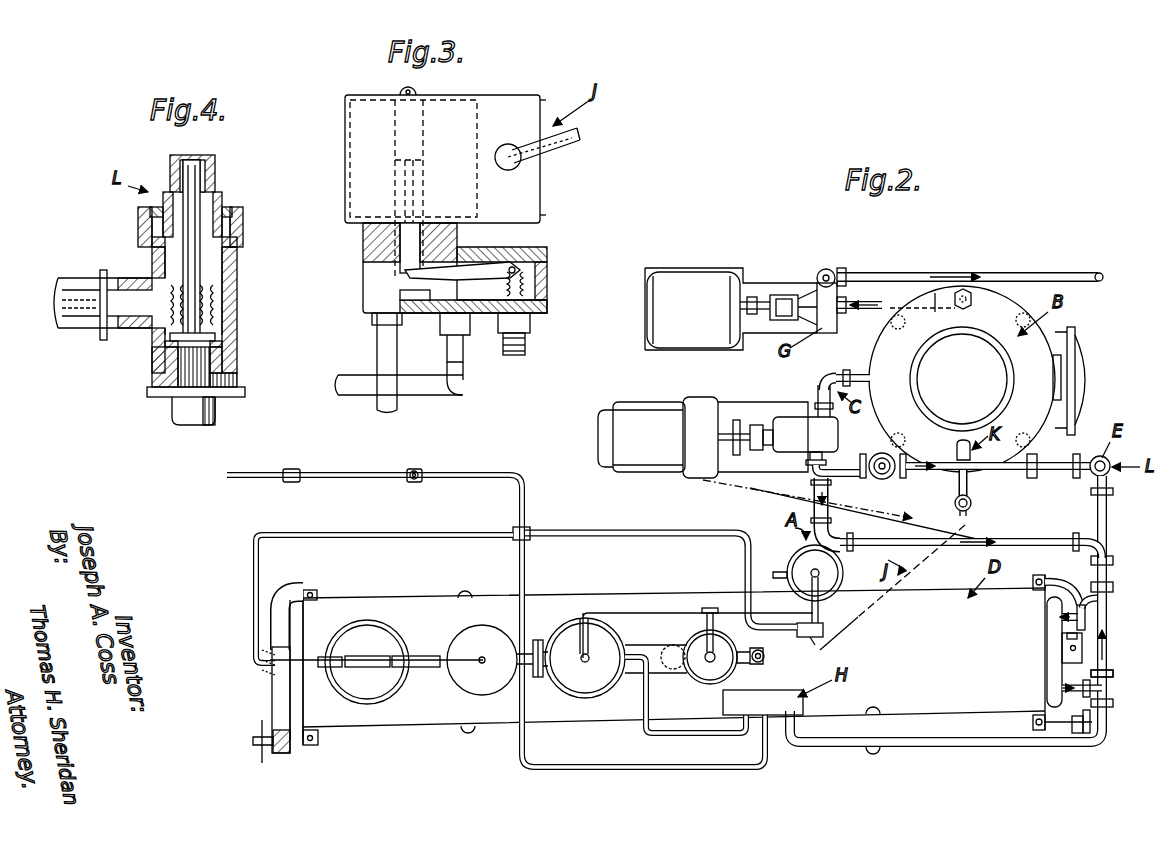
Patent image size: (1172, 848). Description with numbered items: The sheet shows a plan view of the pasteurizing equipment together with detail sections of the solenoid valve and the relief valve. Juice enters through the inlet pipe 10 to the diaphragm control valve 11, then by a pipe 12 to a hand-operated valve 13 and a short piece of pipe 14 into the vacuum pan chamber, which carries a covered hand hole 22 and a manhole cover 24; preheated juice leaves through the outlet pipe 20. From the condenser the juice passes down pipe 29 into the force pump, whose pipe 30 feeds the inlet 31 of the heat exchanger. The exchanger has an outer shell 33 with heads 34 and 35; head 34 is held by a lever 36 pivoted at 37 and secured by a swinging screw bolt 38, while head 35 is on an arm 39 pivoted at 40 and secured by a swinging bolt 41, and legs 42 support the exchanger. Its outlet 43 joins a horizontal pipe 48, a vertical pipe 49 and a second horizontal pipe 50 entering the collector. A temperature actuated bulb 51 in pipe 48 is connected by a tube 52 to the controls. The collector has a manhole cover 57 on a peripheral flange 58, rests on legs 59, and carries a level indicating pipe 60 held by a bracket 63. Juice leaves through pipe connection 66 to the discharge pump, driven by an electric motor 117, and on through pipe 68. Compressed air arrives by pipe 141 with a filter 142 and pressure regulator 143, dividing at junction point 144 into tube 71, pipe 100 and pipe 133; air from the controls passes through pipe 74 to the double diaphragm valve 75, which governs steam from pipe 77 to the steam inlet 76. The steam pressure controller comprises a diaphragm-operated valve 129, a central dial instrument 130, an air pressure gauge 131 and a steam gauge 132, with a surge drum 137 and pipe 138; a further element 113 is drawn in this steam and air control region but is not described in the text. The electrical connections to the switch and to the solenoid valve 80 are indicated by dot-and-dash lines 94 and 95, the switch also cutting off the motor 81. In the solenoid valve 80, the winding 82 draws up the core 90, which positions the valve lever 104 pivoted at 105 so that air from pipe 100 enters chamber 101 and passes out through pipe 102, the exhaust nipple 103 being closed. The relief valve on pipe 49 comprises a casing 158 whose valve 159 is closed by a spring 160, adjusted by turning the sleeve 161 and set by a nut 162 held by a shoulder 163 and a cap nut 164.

In FIG. 2, the inlet pipe 10 is at (780, 572).
In FIG. 2, the diaphragm control valve 11 is at (822, 570).
In FIG. 2, the pipe 12 is at (810, 477).
In FIG. 2, the hand-operated valve 13 is at (872, 455).
In FIG. 2, the short piece of pipe 14 is at (925, 472).
In FIG. 2, the outlet pipe 20 is at (850, 375).
In FIG. 2, the covered hand hole 22 is at (1062, 372).
In FIG. 2, the cover 24 is at (1000, 383).
In FIG. 2, the pipe 29 is at (824, 376).
In FIG. 2, the pipe 30 is at (1025, 538).
In FIG. 2, the inlet 31 is at (1060, 626).
In FIG. 2, the outer shell 33 is at (567, 593).
In FIG. 2, the head 34 is at (295, 632).
In FIG. 2, the head 35 is at (1052, 656).
In FIG. 2, the lever 36 is at (262, 708).
In FIG. 2, the pivot 37 is at (317, 592).
In FIG. 2, the swinging screw bolt 38 is at (290, 750).
In FIG. 2, the arm 39 is at (1082, 640).
In FIG. 2, the pivot 40 is at (1043, 575).
In FIG. 2, the swinging bolt 41 is at (1058, 738).
In FIG. 2, the legs 42 is at (465, 591).
In FIG. 2, the outlet 43 is at (1055, 678).
In FIG. 2, the horizontal pipe 48 is at (1110, 530).
In FIG. 4, the vertical pipe 49 is at (215, 410).
In FIG. 4, the second horizontal pipe 50 is at (88, 322).
In FIG. 2, the second horizontal pipe 50 is at (1052, 472).
In FIG. 2, the temperature actuated bulb 51 is at (1108, 670).
In FIG. 2, the tube 52 is at (972, 742).
In FIG. 2, the cover 57 is at (1086, 375).
In FIG. 2, the peripheral flange 58 is at (1072, 342).
In FIG. 2, the legs 59 is at (1026, 313).
In FIG. 2, the level indicating pipe 60 is at (972, 505).
In FIG. 2, the bracket 63 is at (972, 486).
In FIG. 2, the pipe connection 66 is at (878, 305).
In FIG. 2, the pipe 68 is at (980, 278).
In FIG. 2, the tube 71 is at (610, 768).
In FIG. 2, the pipe 74 is at (683, 738).
In FIG. 2, the double diaphragm valve 75 is at (603, 645).
In FIG. 2, the heat exchanger steam inlet 76 is at (665, 645).
In FIG. 2, the pipe 77 is at (557, 640).
In FIG. 3, the solenoid valve 80 is at (358, 118).
In FIG. 2, the motor 81 is at (668, 405).
In FIG. 3, the winding 82 is at (368, 172).
In FIG. 3, the solenoid core 90 is at (415, 200).
In FIG. 2, the dot-and-dash line 94 is at (846, 511).
In FIG. 2, the dot-and-dash line 95 is at (922, 566).
In FIG. 3, the pipe 100 is at (345, 385).
In FIG. 2, the pipe 100 is at (705, 530).
In FIG. 3, the chamber 101 is at (485, 265).
In FIG. 3, the pipe 102 is at (387, 410).
In FIG. 3, the nipple 103 is at (530, 333).
In FIG. 3, the valve lever 104 is at (440, 270).
In FIG. 3, the pivot 105 is at (525, 262).
In FIG. 2, the gauge 113 is at (705, 668).
In FIG. 2, the electric motor 117 is at (700, 282).
In FIG. 2, the diaphragm-operated valve 129 is at (385, 640).
In FIG. 2, the central dial instrument 130 is at (400, 652).
In FIG. 2, the air pressure gauge 131 is at (360, 640).
In FIG. 2, the steam gauge 132 is at (425, 656).
In FIG. 2, the pipe 133 is at (259, 556).
In FIG. 2, the surge drum 137 is at (486, 628).
In FIG. 2, the pipe 138 is at (450, 660).
In FIG. 2, the pipe 141 is at (500, 472).
In FIG. 2, the filter 142 is at (291, 482).
In FIG. 2, the pressure regulator 143 is at (414, 482).
In FIG. 2, the junction point 144 is at (530, 531).
In FIG. 4, the casing 158 is at (235, 355).
In FIG. 4, the valve 159 is at (215, 335).
In FIG. 4, the spring 160 is at (208, 310).
In FIG. 4, the sleeve 161 is at (215, 170).
In FIG. 4, the nut 162 is at (222, 197).
In FIG. 4, the shoulder 163 is at (232, 210).
In FIG. 4, the cap nut 164 is at (243, 232).